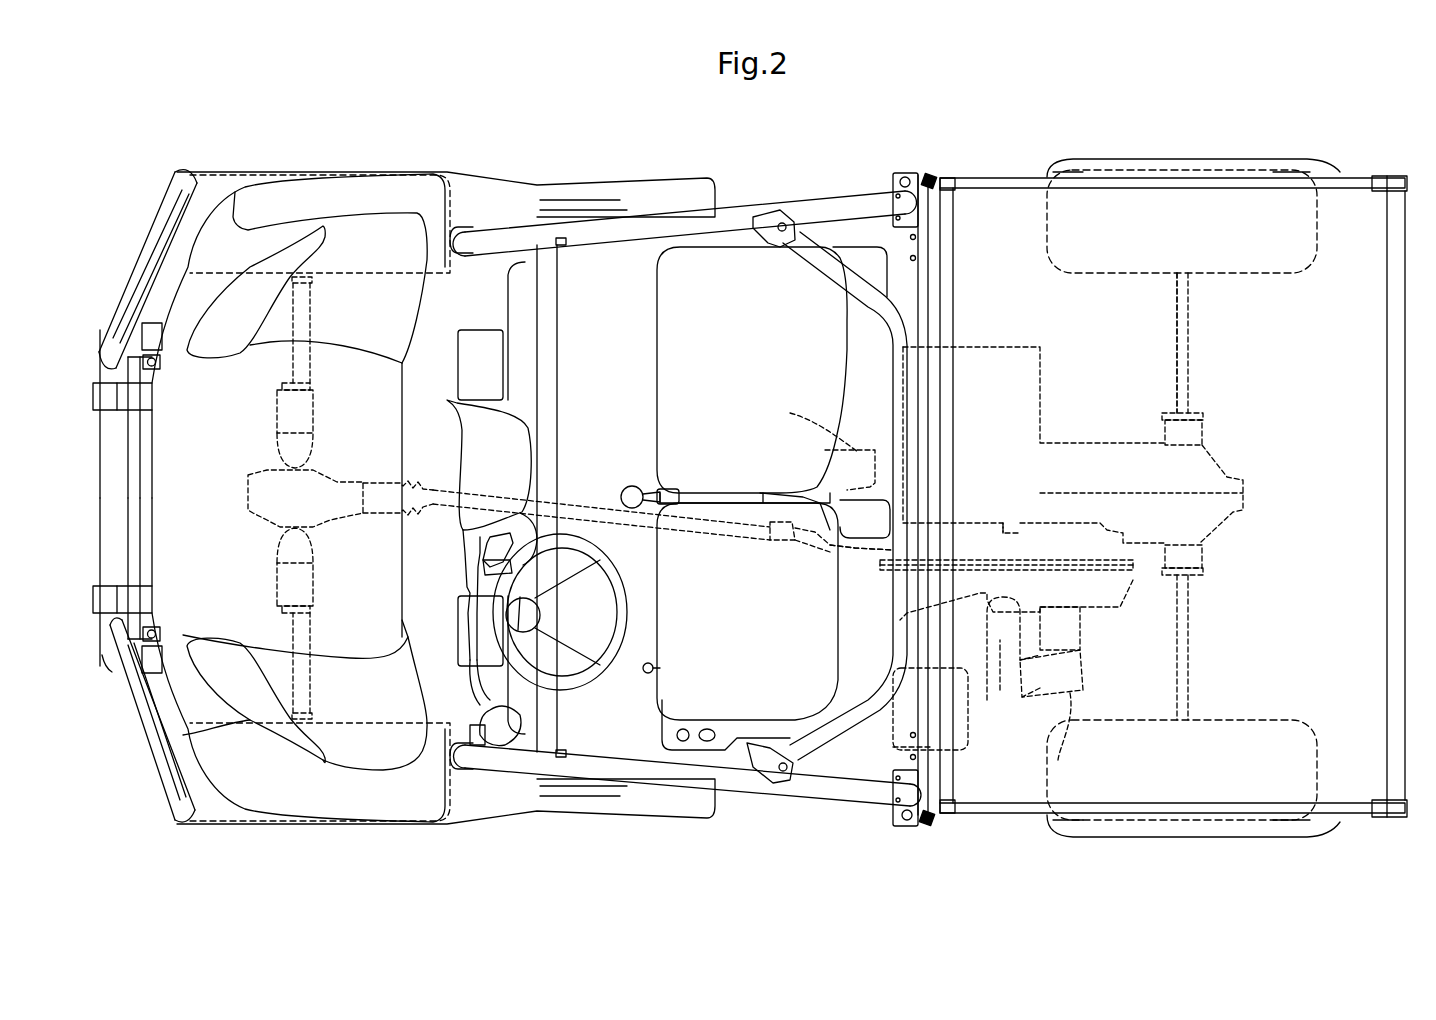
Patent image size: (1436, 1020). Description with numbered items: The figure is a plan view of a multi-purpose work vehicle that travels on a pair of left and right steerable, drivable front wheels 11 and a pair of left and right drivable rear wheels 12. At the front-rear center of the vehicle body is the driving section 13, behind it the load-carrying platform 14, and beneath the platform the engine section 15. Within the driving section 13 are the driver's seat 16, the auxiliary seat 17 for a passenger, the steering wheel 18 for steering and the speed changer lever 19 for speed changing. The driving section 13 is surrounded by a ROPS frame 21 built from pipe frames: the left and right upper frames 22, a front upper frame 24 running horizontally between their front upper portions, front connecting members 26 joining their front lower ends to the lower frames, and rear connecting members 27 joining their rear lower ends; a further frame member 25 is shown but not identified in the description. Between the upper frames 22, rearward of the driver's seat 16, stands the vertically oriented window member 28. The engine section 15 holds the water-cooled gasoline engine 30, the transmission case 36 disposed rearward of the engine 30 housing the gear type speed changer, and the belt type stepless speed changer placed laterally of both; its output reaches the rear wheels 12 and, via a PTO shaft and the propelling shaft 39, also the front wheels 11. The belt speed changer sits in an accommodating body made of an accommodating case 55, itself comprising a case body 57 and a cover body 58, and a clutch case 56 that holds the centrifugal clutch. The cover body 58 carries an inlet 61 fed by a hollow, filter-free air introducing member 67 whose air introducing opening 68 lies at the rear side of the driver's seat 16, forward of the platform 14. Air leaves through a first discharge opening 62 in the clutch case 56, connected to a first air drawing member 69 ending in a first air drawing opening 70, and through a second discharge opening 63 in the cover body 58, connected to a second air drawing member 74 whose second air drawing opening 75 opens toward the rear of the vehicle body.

The front wheels 11 is at (237, 178).
The rear wheels 12 is at (1317, 217).
The driving section 13 is at (846, 165).
The load-carrying platform 14 is at (1007, 197).
The engine section 15 is at (1103, 427).
The driver's seat 16 is at (673, 685).
The auxiliary seat 17 is at (660, 350).
The steering wheel 18 is at (627, 613).
The speed changer lever 19 is at (535, 537).
The ROPS frame 21 is at (741, 200).
The upper frames 22 is at (660, 215).
The front upper frame 24 is at (553, 418).
The roll bar 25 is at (892, 310).
The front connecting members 26 is at (457, 197).
The rear connecting members 27 is at (905, 172).
The window member 28 is at (923, 338).
The engine 30 is at (1040, 347).
The transmission case 36 is at (1208, 468).
The propelling shaft 39 is at (713, 527).
The accommodating case 55 is at (1127, 597).
The clutch case 56 is at (972, 520).
The case body 57 is at (1107, 533).
The cover body 58 is at (1120, 590).
The inlet 61 is at (1077, 645).
The first discharge opening 62 is at (888, 537).
The second discharge opening 63 is at (997, 633).
The air introducing member 67 is at (980, 733).
The air introducing opening 68 is at (893, 747).
The first air drawing member 69 is at (828, 416).
The first air drawing opening 70 is at (880, 467).
The second air drawing member 74 is at (1070, 693).
The second air drawing opening 75 is at (1093, 670).